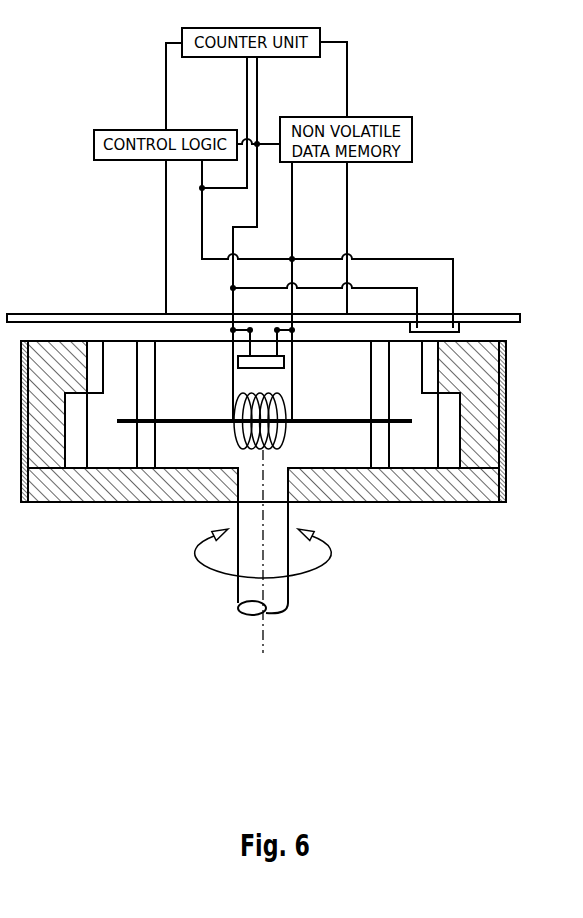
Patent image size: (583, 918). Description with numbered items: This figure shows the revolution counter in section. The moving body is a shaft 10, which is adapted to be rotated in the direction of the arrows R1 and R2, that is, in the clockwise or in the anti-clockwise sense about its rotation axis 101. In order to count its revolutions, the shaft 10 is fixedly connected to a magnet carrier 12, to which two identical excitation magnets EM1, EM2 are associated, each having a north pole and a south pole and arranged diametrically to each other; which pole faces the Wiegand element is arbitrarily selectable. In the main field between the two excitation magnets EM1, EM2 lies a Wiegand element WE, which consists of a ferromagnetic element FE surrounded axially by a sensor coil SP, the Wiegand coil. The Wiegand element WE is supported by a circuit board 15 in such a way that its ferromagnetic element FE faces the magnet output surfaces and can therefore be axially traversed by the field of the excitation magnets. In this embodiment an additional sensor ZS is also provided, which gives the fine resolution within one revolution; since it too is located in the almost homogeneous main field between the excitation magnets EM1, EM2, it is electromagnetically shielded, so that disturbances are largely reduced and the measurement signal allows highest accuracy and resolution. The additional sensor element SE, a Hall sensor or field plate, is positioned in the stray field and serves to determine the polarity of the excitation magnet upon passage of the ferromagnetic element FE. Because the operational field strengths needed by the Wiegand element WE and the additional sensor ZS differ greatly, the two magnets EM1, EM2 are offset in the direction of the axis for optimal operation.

The shaft 10 is at (280, 593).
The magnet carrier 12 is at (95, 492).
The circuit board 15 is at (120, 313).
The rotation axis 101 is at (263, 630).
The excitation magnet EM1 is at (50, 370).
The excitation magnet EM2 is at (477, 370).
The ferromagnetic element FE is at (178, 418).
The Wiegand coil SP is at (283, 407).
The additional sensor ZS is at (283, 362).
The additional sensor element SE is at (462, 320).
The Wiegand element WE is at (312, 442).
The arrow R1 is at (216, 552).
The arrow R2 is at (313, 553).